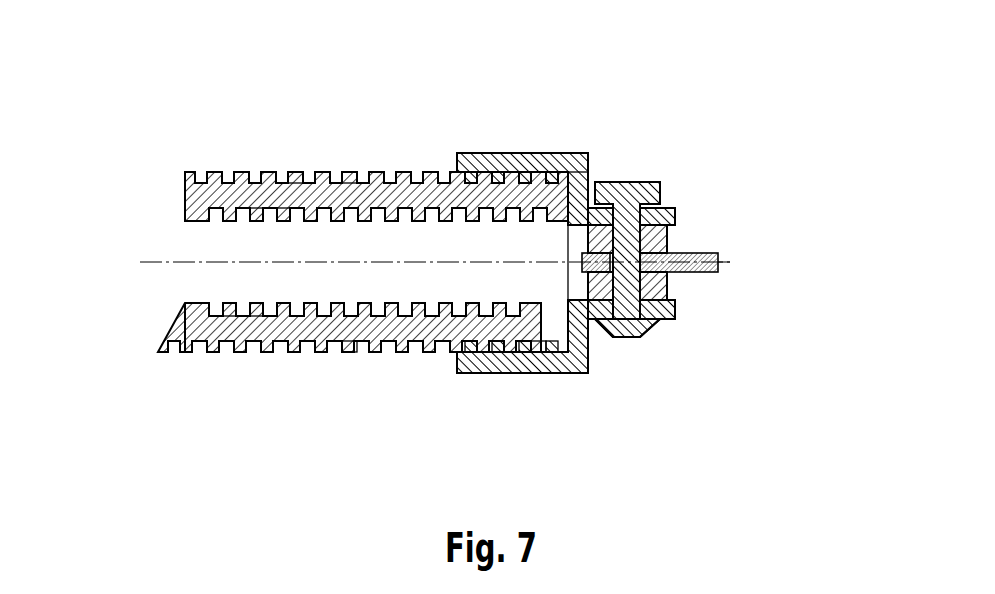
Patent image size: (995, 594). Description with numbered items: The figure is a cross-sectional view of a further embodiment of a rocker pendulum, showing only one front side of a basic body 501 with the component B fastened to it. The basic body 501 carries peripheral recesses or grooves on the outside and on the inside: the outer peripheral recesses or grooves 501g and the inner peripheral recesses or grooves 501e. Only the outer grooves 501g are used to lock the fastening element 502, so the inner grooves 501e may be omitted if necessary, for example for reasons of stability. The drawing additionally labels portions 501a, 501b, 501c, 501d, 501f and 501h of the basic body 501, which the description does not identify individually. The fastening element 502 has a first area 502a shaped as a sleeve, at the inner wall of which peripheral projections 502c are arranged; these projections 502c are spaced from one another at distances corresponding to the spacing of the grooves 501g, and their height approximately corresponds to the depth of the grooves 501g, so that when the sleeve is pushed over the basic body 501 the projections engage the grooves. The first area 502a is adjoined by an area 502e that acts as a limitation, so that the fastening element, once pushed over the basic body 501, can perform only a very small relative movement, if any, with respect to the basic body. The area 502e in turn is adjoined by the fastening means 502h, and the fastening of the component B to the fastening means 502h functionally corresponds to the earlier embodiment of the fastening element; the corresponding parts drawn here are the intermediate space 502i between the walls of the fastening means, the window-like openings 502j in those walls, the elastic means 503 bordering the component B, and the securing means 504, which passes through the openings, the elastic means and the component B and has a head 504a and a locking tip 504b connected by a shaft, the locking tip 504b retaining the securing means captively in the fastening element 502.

The basic body 501 is at (187, 166).
The end portion of first member 501a is at (530, 345).
The tubular wall 501b is at (343, 328).
The left end face 501c is at (190, 330).
The lower inner ribs 501d is at (247, 303).
The inner peripheral recesses or grooves 501e is at (290, 221).
The bore 501f is at (393, 257).
The outer peripheral recesses or grooves 501g is at (365, 175).
The outer rib 501h is at (297, 175).
The fastening element 502 is at (565, 378).
The first area 502a is at (503, 153).
The peripheral projections 502c is at (540, 153).
The limitation area 502e is at (630, 183).
The fastening means 502h is at (662, 207).
The right spacer 502i is at (670, 238).
The lower washer 502j is at (670, 287).
The sealing ring 503 is at (670, 280).
The bolt 504 is at (718, 255).
The nut body 504a is at (636, 183).
The nut end 504b is at (630, 343).
The component B is at (729, 266).